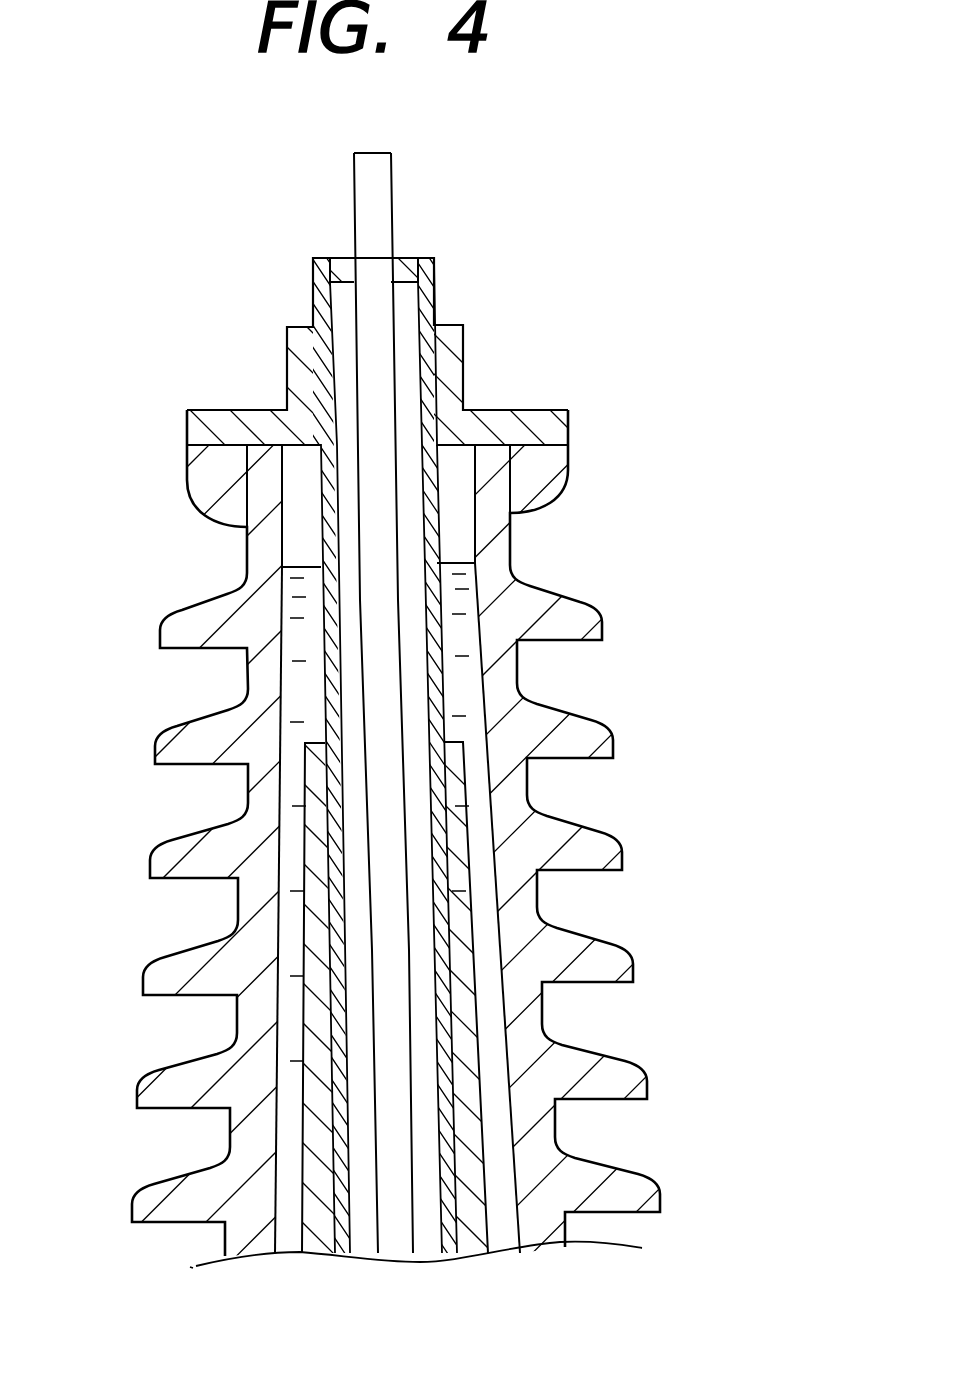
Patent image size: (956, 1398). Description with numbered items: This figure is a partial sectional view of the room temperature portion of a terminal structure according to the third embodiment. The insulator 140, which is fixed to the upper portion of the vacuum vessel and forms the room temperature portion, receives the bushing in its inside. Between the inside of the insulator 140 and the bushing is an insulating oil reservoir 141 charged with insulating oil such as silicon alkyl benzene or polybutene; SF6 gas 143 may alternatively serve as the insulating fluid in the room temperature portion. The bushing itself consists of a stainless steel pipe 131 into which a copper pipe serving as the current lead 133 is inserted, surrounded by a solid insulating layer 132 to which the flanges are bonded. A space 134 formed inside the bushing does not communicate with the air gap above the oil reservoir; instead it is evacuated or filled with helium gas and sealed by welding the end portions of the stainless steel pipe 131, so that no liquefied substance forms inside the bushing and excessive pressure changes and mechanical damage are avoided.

The stainless steel pipe 131 is at (428, 293).
The solid insulating layer 132 is at (467, 1020).
The current lead 133 is at (378, 191).
The space 134 is at (352, 905).
The insulator 140 is at (176, 628).
The insulating oil reservoir 141 is at (462, 632).
The SF6 gas 143 is at (293, 492).